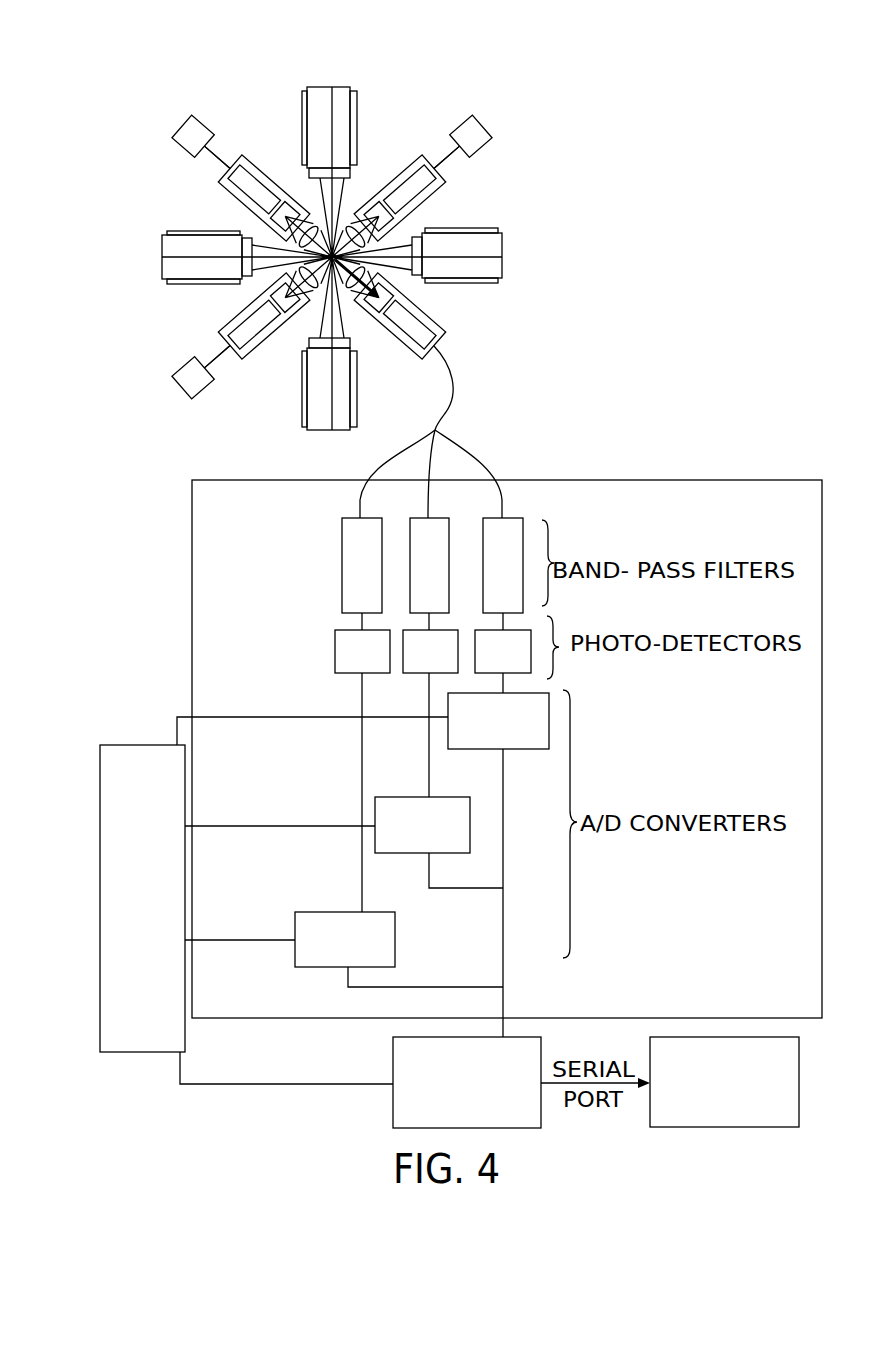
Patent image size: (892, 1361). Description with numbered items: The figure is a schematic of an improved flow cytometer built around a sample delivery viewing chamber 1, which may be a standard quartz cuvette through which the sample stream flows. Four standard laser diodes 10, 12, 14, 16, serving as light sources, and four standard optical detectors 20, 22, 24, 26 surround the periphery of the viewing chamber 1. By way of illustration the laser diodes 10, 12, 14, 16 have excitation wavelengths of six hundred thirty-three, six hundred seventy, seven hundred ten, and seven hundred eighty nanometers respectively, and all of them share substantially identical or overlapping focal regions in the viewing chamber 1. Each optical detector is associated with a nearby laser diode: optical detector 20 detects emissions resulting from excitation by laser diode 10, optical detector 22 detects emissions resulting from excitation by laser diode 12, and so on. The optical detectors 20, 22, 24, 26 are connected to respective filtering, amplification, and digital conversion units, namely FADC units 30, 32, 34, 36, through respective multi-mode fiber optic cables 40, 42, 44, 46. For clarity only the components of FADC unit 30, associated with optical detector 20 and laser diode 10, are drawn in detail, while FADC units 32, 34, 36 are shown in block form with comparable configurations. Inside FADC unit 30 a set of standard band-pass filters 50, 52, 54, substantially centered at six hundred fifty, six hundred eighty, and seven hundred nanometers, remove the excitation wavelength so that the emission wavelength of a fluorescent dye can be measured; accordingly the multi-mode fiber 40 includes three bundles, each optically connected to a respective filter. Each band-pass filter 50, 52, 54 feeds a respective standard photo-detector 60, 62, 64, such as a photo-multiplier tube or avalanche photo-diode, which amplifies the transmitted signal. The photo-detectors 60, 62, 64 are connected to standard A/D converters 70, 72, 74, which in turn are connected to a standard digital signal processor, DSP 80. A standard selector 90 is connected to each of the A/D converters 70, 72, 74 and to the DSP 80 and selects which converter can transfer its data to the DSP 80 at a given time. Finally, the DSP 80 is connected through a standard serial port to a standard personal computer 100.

The viewing chamber 1 is at (336, 255).
The laser diode 10 is at (340, 430).
The laser diode 12 is at (502, 250).
The laser diode 14 is at (337, 86).
The laser diode 16 is at (162, 251).
The optical detector 20 is at (437, 326).
The optical detector 22 is at (391, 182).
The optical detector 24 is at (287, 68).
The optical detector 26 is at (230, 318).
The FADC unit 30 is at (568, 480).
The FADC unit 32 is at (491, 132).
The FADC unit 34 is at (170, 137).
The FADC unit 36 is at (185, 399).
The multi-mode fiber optic cable 40 is at (442, 409).
The multi-mode fiber optic cable 42 is at (450, 151).
The multi-mode fiber optic cable 44 is at (220, 175).
The multi-mode fiber optic cable 46 is at (229, 361).
The band-pass filter 50 is at (346, 518).
The band-pass filter 52 is at (410, 533).
The band-pass filter 54 is at (483, 533).
The photo-detector 60 is at (362, 643).
The photo-detector 62 is at (430, 643).
The photo-detector 64 is at (503, 643).
The A/D converter 70 is at (345, 820).
The A/D converter 72 is at (422, 763).
The A/D converter 74 is at (498, 711).
The digital signal processor 80 is at (467, 1082).
The selector 90 is at (135, 1052).
The personal computer 100 is at (724, 1082).